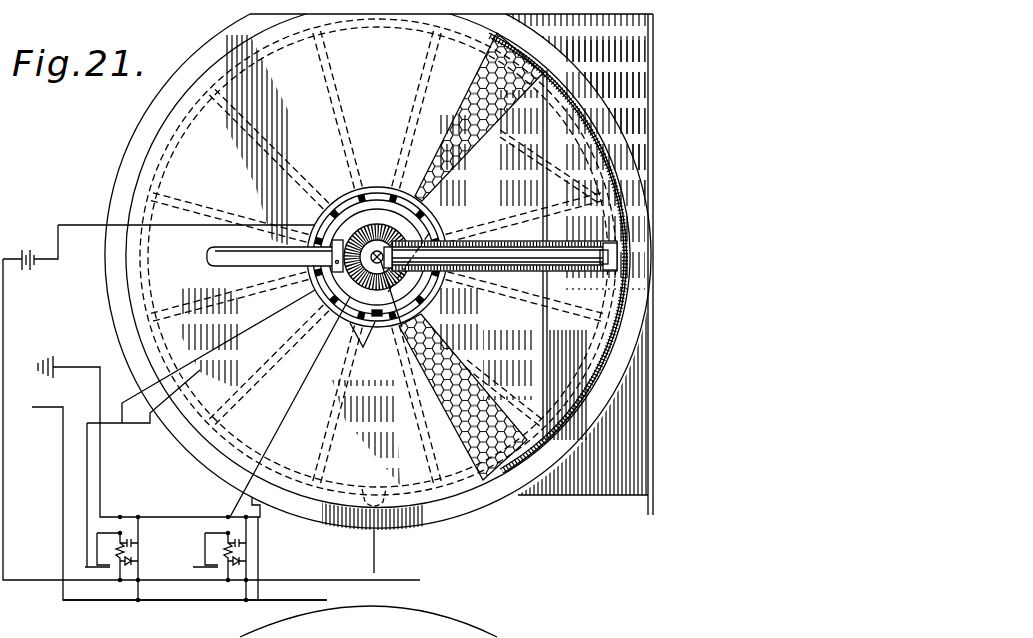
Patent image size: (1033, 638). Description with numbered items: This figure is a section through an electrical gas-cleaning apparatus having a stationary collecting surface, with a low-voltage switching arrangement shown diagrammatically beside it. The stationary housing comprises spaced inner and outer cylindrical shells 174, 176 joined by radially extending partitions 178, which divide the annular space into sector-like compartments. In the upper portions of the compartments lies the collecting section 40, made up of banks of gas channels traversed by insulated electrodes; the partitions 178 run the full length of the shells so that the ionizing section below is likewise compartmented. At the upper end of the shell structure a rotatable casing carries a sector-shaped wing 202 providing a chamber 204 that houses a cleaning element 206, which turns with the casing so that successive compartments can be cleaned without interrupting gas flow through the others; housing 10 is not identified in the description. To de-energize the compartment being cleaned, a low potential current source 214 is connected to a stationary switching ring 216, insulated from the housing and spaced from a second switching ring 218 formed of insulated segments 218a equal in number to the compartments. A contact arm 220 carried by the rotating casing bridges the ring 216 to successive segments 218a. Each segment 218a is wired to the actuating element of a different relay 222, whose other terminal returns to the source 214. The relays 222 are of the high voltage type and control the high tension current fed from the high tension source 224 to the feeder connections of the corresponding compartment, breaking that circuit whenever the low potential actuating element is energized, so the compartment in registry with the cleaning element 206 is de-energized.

The housing 10 is at (612, 496).
The collecting section 40 is at (498, 498).
The inner cylindrical shell 174 is at (452, 219).
The outer cylindrical shell 176 is at (174, 148).
The radially extending partitions 178 is at (418, 97).
The sector-shaped wing 202 is at (383, 250).
The chamber 204 is at (551, 255).
The cleaning element 206 is at (568, 263).
The low potential current source 214 is at (27, 250).
The stationary switching ring 216 is at (340, 192).
The second switching ring 218 is at (327, 214).
The ring segments 218a is at (380, 316).
The contact arm 220 is at (407, 273).
The relays 222 is at (134, 557).
The high tension source 224 is at (165, 602).